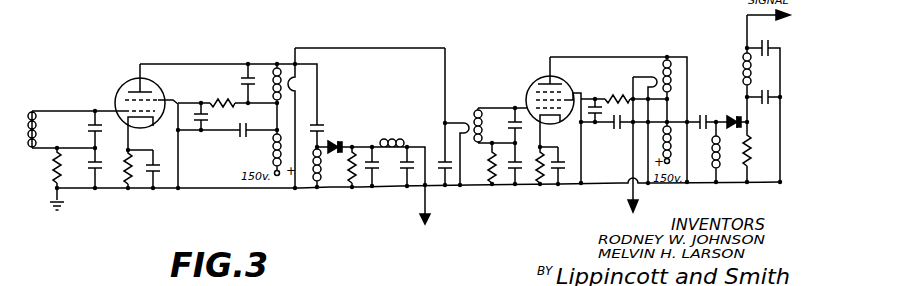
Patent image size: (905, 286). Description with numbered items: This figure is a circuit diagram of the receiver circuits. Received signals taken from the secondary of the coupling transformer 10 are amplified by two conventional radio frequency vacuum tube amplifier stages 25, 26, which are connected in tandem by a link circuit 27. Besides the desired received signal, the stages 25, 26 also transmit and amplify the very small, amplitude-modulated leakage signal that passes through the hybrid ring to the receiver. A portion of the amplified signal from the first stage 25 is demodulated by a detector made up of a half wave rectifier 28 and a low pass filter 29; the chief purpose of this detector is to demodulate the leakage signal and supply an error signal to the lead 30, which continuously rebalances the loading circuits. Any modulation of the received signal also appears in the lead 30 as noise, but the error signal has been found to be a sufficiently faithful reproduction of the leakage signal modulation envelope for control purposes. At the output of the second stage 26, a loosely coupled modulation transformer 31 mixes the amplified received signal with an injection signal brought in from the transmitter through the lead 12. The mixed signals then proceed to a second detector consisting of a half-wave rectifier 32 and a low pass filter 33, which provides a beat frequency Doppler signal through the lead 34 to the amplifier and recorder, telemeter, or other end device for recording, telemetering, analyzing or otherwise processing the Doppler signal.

The coupling transformer 10 is at (36, 135).
The lead 12 is at (635, 191).
The radio frequency vacuum tube amplifier stage 25 is at (121, 93).
The radio frequency vacuum tube amplifier stage 26 is at (531, 91).
The link circuit 27 is at (369, 56).
The half wave rectifier 28 is at (336, 140).
The low pass filter 29 is at (391, 138).
The lead 30 is at (426, 203).
The modulation transformer 31 is at (659, 72).
The half-wave rectifier 32 is at (735, 111).
The low pass filter 33 is at (746, 66).
The lead 34 is at (742, 26).